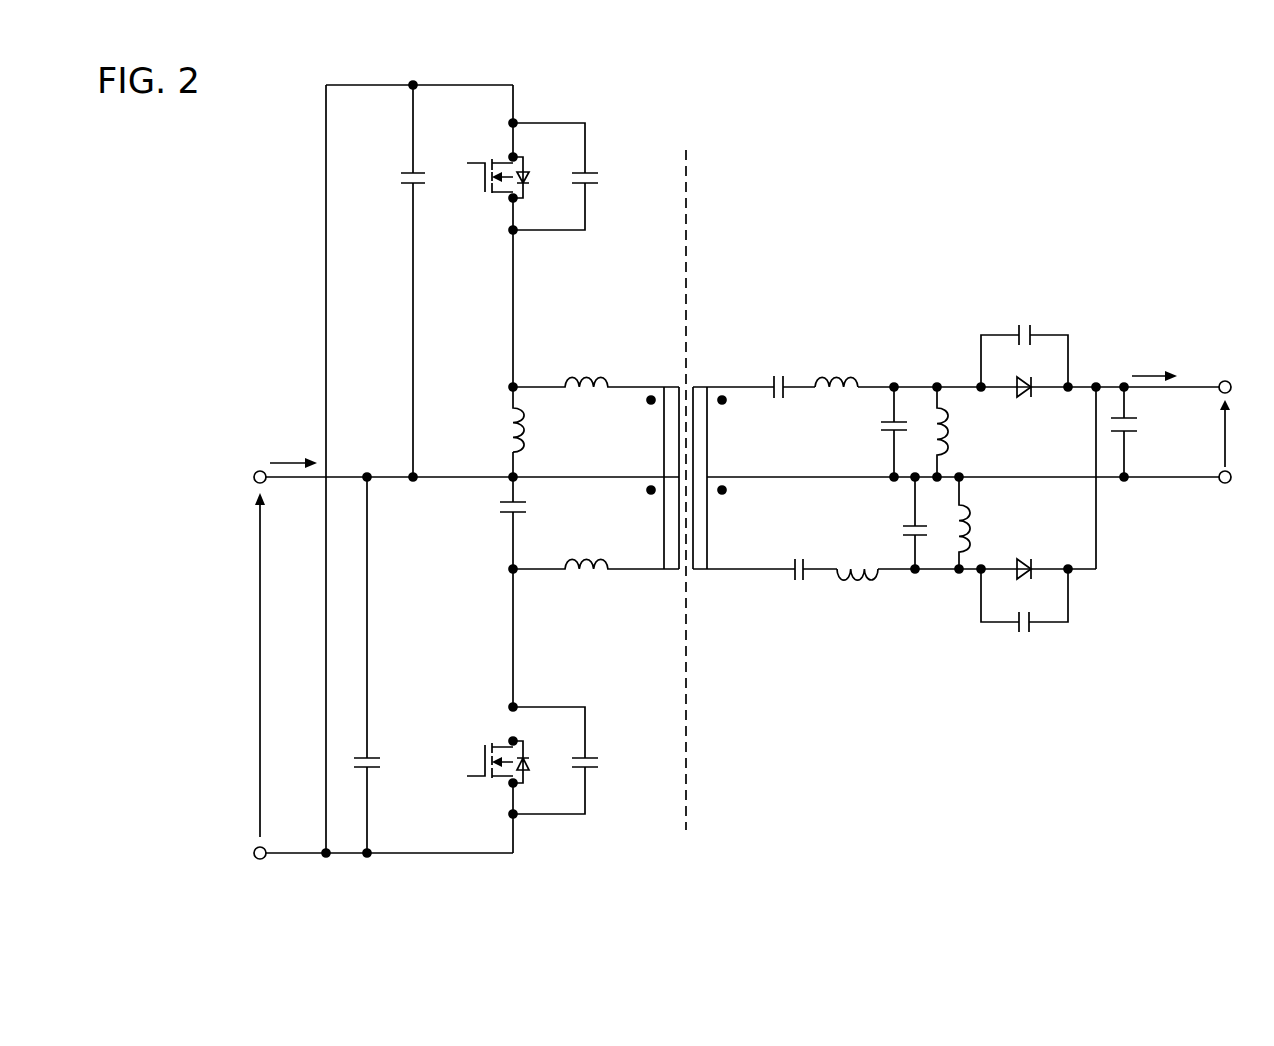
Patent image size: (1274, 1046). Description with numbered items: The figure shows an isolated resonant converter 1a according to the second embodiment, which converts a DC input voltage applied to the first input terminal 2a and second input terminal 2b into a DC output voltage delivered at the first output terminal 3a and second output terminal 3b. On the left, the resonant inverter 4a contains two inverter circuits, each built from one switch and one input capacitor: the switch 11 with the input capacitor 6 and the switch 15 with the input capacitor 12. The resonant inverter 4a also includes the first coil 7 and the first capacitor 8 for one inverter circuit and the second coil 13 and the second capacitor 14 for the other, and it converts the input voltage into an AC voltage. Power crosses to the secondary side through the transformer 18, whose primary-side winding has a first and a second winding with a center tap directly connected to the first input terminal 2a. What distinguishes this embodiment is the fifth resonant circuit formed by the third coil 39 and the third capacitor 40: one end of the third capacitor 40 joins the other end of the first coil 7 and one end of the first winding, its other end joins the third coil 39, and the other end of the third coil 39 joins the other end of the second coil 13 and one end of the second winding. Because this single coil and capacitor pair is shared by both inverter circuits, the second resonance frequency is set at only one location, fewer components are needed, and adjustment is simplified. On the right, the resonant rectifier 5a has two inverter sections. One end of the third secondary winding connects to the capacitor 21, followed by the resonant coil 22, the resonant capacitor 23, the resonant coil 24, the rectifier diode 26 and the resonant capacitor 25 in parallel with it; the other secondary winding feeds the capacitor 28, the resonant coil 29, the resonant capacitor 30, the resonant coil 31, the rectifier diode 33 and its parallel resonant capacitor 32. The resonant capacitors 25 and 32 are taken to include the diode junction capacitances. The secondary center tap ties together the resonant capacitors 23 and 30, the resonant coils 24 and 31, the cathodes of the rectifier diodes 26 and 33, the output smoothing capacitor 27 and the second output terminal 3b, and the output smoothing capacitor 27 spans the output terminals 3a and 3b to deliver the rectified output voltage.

The resonant converter 1a is at (1128, 123).
The resonant inverter 4a is at (208, 213).
The resonant rectifier 5a is at (970, 212).
The first input terminal 2a is at (253, 477).
The second input terminal 2b is at (254, 853).
The first output terminal 3a is at (1229, 381).
The second output terminal 3b is at (1229, 484).
The input capacitor 6 is at (381, 763).
The first coil 7 is at (584, 563).
The first capacitor 8 is at (599, 763).
The switch 11 is at (486, 747).
The input capacitor 12 is at (400, 178).
The second coil 13 is at (584, 372).
The second capacitor 14 is at (599, 180).
The switch 15 is at (486, 162).
The transformer 18 is at (652, 370).
The capacitor 21 is at (777, 372).
The resonant coil 22 is at (833, 373).
The resonant capacitor 23 is at (880, 427).
The resonant coil 24 is at (953, 432).
The resonant capacitor 25 is at (1028, 325).
The rectifier diode 26 is at (1026, 399).
The output smoothing capacitor 27 is at (1137, 427).
The capacitor 28 is at (799, 581).
The resonant coil 29 is at (857, 584).
The resonant capacitor 30 is at (900, 527).
The resonant coil 31 is at (975, 531).
The resonant capacitor 32 is at (1025, 634).
The rectifier diode 33 is at (1027, 561).
The third coil 39 is at (524, 430).
The third capacitor 40 is at (527, 506).